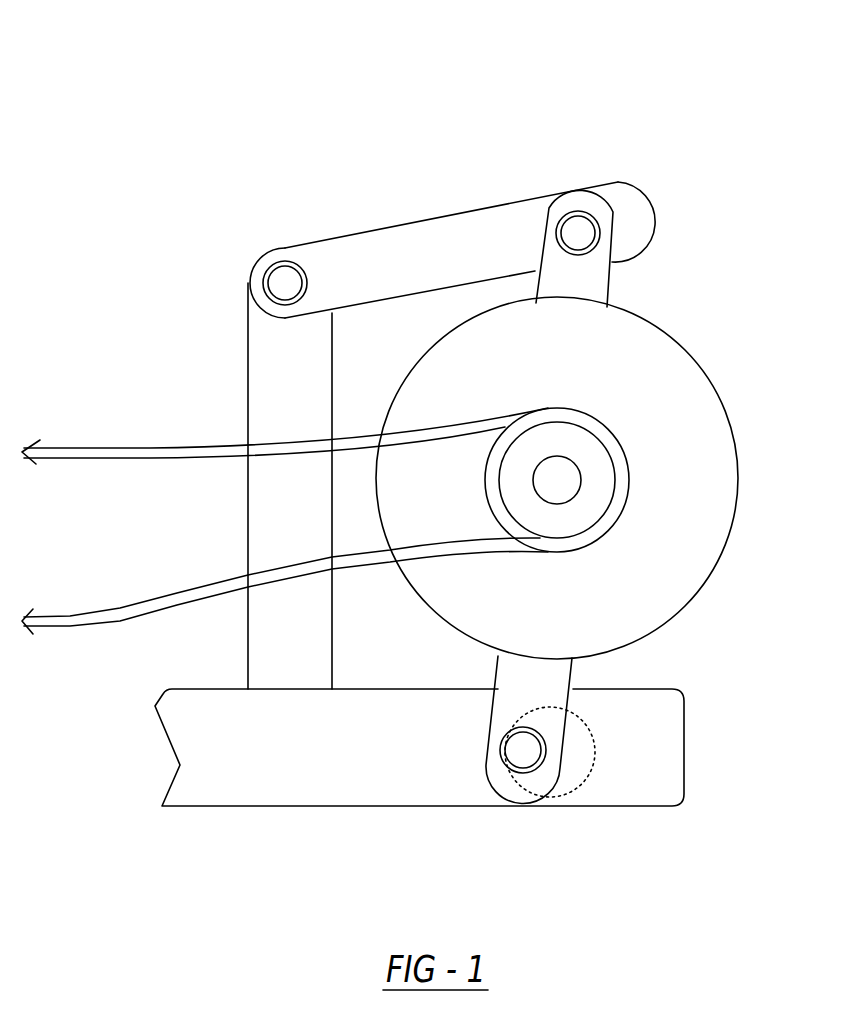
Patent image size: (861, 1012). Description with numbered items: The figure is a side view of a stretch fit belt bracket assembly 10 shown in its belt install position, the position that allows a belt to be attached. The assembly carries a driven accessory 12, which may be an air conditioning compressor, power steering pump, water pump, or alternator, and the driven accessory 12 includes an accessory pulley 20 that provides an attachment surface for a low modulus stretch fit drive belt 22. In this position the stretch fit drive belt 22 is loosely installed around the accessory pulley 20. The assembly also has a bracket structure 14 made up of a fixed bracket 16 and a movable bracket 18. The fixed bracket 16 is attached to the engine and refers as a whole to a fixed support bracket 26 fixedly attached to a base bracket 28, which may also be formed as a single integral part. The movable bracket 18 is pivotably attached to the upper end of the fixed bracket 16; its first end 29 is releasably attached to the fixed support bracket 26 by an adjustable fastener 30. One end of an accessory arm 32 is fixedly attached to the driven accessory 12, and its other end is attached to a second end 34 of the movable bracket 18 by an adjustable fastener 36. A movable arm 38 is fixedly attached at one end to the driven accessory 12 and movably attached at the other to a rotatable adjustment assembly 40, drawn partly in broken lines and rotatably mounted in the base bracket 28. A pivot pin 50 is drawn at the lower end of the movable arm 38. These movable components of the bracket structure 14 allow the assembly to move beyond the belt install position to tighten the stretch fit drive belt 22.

The stretch fit belt bracket assembly 10 is at (663, 105).
The driven accessory 12 is at (717, 542).
The bracket structure 14 is at (373, 222).
The fixed bracket 16 is at (327, 748).
The movable bracket 18 is at (508, 228).
The accessory pulley 20 is at (587, 440).
The stretch fit drive belt 22 is at (112, 447).
The fixed support bracket 26 is at (278, 394).
The base bracket 28 is at (427, 783).
The first end 29 is at (323, 253).
The adjustable fastener 30 is at (287, 283).
The accessory arm 32 is at (592, 287).
The second end 34 is at (632, 212).
The adjustable fastener 36 is at (563, 212).
The movable arm 38 is at (555, 672).
The rotatable adjustment assembly 40 is at (553, 728).
The lower pivot pin 50 is at (522, 750).